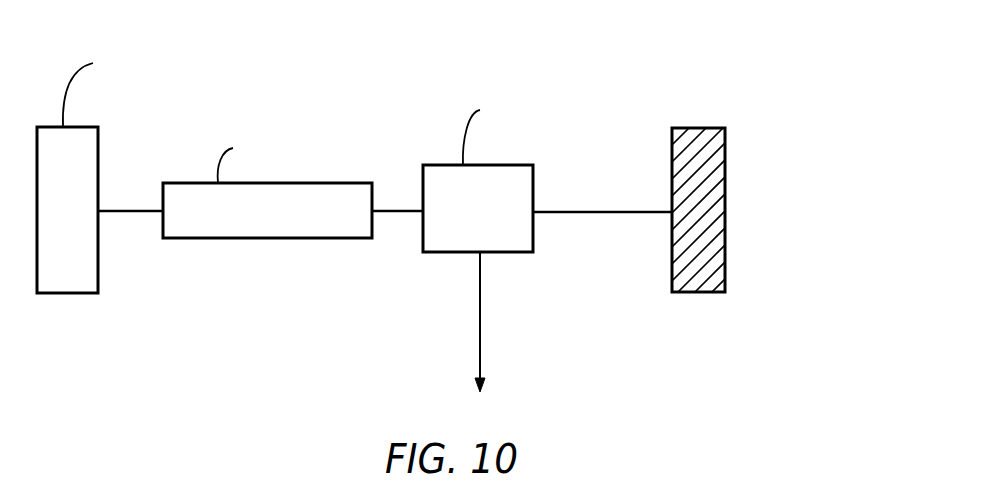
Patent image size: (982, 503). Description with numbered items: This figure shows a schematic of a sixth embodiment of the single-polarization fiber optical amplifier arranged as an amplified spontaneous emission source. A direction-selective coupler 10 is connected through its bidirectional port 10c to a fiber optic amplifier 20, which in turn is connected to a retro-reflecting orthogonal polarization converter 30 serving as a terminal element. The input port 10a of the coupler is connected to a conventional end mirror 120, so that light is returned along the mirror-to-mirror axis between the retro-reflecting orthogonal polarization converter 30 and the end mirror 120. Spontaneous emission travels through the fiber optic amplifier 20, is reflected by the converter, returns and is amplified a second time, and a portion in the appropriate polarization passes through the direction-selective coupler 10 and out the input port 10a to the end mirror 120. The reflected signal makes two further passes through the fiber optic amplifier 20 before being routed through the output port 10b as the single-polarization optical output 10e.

The retro-reflecting orthogonal polarization converter 30 is at (78, 223).
The fiber optic amplifier 20 is at (287, 226).
The direction-selective coupler 10 is at (496, 225).
The input port 10a is at (535, 205).
The output port 10b is at (483, 256).
The bidirectional port 10c is at (420, 212).
The optical output 10e is at (477, 372).
The end mirror 120 is at (688, 128).